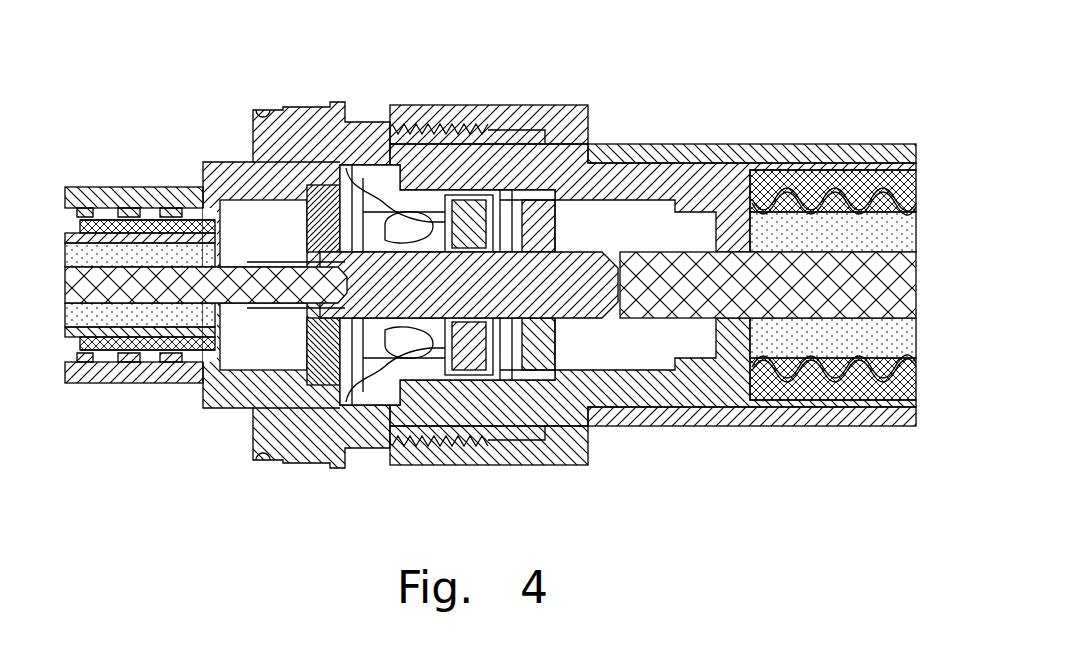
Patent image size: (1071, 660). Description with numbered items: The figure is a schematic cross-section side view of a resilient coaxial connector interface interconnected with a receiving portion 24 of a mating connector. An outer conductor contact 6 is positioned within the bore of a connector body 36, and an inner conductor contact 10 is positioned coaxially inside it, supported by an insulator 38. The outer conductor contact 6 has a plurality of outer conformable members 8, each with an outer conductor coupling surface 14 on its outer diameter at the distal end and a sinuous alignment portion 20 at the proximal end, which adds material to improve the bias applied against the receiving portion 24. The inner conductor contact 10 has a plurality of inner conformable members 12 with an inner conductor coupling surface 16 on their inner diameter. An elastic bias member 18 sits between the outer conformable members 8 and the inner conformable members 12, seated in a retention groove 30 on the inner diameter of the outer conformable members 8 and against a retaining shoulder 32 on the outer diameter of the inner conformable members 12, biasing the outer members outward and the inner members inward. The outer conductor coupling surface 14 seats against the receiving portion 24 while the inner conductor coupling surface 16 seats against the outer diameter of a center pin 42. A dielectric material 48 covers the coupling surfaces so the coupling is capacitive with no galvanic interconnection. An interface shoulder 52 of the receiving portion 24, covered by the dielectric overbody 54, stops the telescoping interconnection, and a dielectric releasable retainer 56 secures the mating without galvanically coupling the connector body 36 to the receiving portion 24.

The outer conductor contact 6 is at (427, 138).
The outer conformable members 8 is at (427, 138).
The inner conductor contact 10 is at (412, 419).
The inner conformable members 12 is at (412, 419).
The outer conductor coupling surface 14 is at (427, 138).
The inner conductor coupling surface 16 is at (452, 312).
The elastic bias member 18 is at (470, 357).
The alignment portion 20 is at (402, 200).
The receiving portion 24 is at (612, 170).
The retention groove 30 is at (463, 197).
The retaining shoulder 32 is at (448, 248).
The connector body 36 is at (268, 140).
The insulator 38 is at (322, 218).
The center pin 42 is at (588, 265).
The dielectric material 48 is at (458, 197).
The interface shoulder 52 is at (578, 108).
The overbody 54 is at (693, 417).
The releasable retainer 56 is at (538, 115).